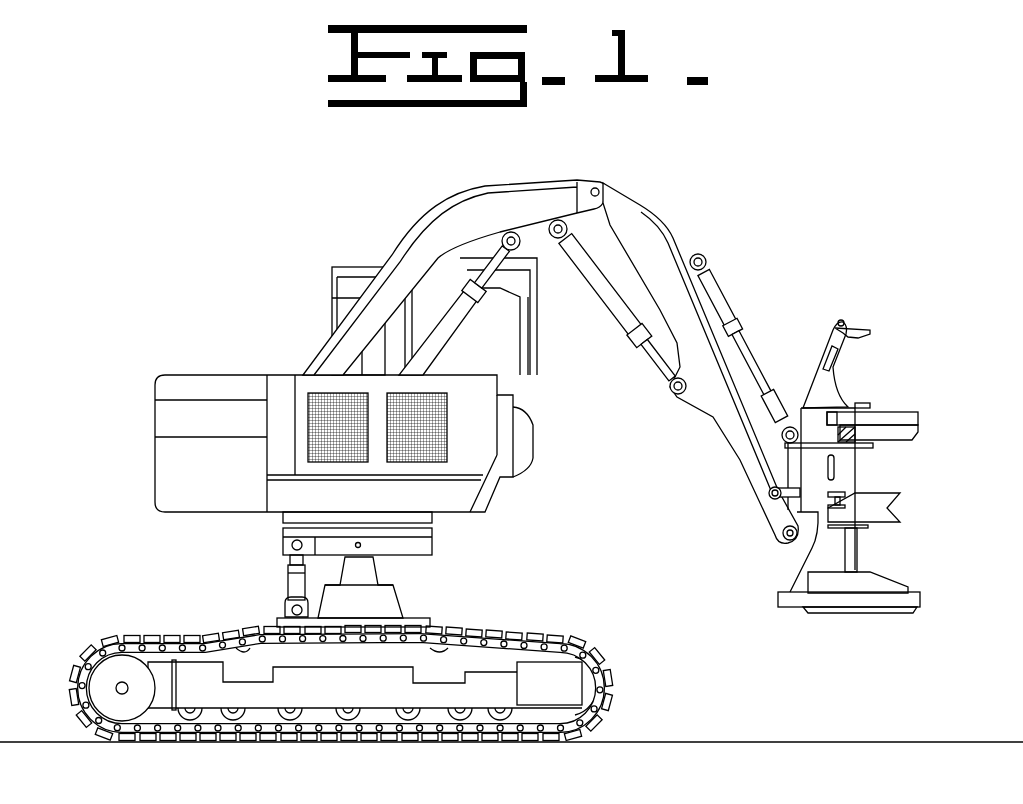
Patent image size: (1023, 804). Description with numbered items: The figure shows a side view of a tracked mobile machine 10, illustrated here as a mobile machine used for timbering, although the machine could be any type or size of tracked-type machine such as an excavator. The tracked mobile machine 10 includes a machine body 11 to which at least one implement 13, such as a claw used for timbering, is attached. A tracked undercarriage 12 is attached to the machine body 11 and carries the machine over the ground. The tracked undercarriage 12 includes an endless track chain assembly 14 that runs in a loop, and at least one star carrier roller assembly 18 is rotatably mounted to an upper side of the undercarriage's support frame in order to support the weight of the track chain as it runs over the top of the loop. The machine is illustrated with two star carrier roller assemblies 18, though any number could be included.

The tracked mobile machine 10 is at (816, 235).
The machine body 11 is at (495, 495).
The tracked undercarriage 12 is at (478, 690).
The implement 13 is at (897, 452).
The endless track chain assembly 14 is at (610, 675).
The star carrier roller assembly 18 is at (243, 660).